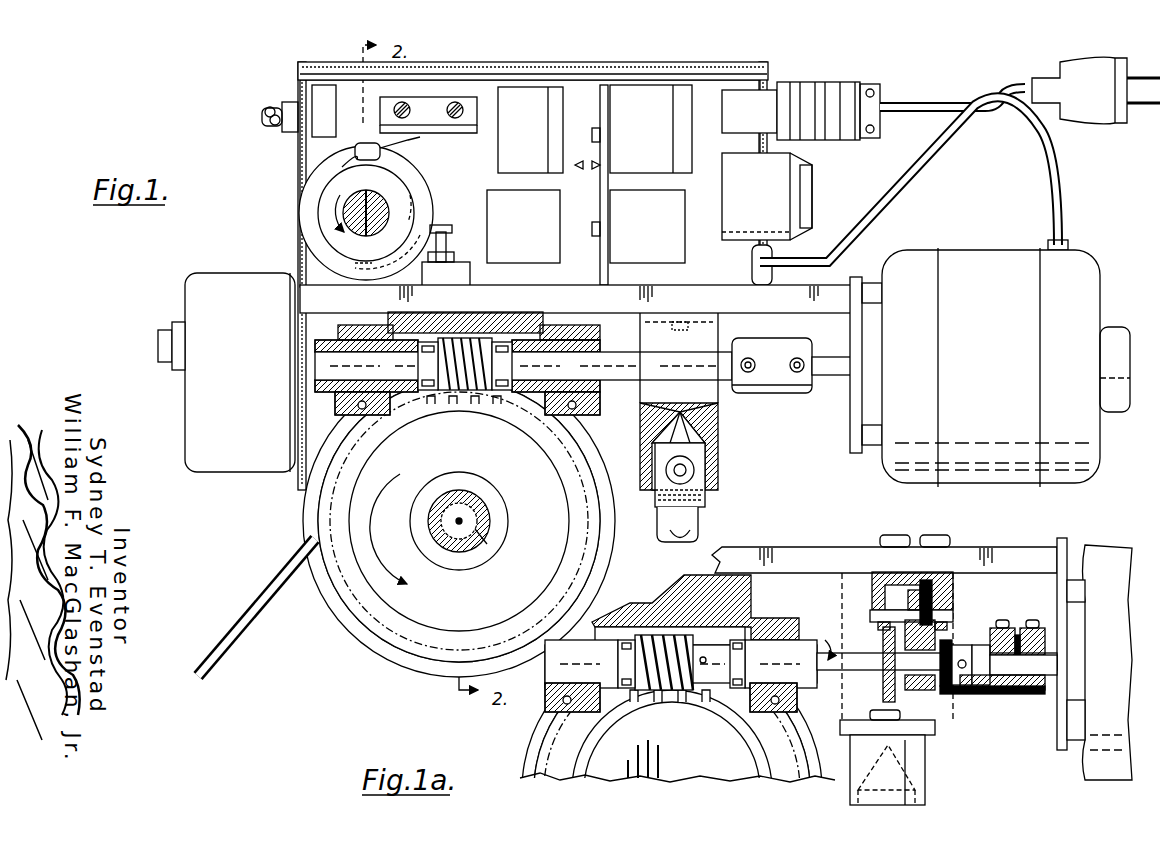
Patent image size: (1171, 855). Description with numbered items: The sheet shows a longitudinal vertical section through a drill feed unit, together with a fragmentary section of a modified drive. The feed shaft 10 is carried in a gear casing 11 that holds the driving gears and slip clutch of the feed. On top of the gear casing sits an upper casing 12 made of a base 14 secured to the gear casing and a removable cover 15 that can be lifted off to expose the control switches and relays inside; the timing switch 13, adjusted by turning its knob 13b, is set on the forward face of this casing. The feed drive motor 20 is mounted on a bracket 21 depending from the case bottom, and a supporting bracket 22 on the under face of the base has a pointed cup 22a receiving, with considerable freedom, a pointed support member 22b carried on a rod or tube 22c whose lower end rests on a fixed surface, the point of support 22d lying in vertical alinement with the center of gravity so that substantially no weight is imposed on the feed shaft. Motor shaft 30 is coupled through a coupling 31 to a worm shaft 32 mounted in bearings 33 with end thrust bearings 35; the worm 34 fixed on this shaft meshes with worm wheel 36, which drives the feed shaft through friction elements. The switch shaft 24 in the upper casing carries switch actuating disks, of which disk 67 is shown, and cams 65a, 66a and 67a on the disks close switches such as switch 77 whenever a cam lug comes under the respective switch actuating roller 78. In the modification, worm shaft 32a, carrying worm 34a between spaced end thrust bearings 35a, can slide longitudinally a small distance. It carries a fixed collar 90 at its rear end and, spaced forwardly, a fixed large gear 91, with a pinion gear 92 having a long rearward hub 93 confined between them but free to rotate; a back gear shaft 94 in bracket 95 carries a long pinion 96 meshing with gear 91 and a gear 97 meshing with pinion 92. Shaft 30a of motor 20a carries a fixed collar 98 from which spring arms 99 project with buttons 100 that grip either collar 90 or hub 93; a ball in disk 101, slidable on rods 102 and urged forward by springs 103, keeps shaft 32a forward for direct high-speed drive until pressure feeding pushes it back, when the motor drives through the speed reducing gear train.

In FIG. 1, the feed shaft 10 is at (480, 528).
In FIG. 1, the gear casing 11 is at (570, 332).
In FIG. 1, the casing 12 is at (590, 62).
In FIG. 1, the timing switch 13 is at (240, 372).
In FIG. 1, the knob 13b is at (158, 346).
In FIG. 1, the base 14 is at (576, 299).
In FIG. 1A, the base 14 is at (884, 560).
In FIG. 1, the removable cover 15 is at (487, 62).
In FIG. 1, the feed drive motor 20 is at (1006, 367).
In FIG. 1A, the motor 20a is at (1104, 662).
In FIG. 1, the bracket 21 is at (850, 432).
In FIG. 1, the supporting bracket 22 is at (722, 424).
In FIG. 1A, the supporting bracket 22 is at (845, 778).
In FIG. 1, the pointed cup 22a is at (700, 436).
In FIG. 1A, the pointed cup 22a is at (918, 790).
In FIG. 1, the pointed support member 22b is at (700, 455).
In FIG. 1, the rod or tube 22c is at (690, 520).
In FIG. 1, the point of support 22d is at (705, 420).
In FIG. 1, the switch shaft 24 is at (362, 218).
In FIG. 1, the motor shaft 30 is at (835, 375).
In FIG. 1A, the motor shaft 30a is at (1035, 675).
In FIG. 1, the coupling 31 is at (772, 365).
In FIG. 1, the worm shaft 32 is at (600, 367).
In FIG. 1A, the worm shaft 32a is at (856, 658).
In FIG. 1, the bearings 33 is at (345, 395).
In FIG. 1, the worm 34 is at (468, 392).
In FIG. 1A, the worm 34a is at (690, 692).
In FIG. 1, the end thrust bearings 35 is at (428, 392).
In FIG. 1A, the end thrust bearings 35a is at (627, 690).
In FIG. 1, the worm wheel 36 is at (478, 521).
In FIG. 1A, the worm wheel 36 is at (672, 747).
In FIG. 1, the switch actuating cam 65a is at (300, 130).
In FIG. 1, the switch actuating cam 66a is at (430, 230).
In FIG. 1, the switch actuating disk 67 is at (410, 186).
In FIG. 1, the switch actuating cam 67a is at (412, 207).
In FIG. 1, the switch 77 is at (428, 115).
In FIG. 1, the switch actuating roller 78 is at (372, 152).
In FIG. 1A, the fixed collar 90 is at (980, 690).
In FIG. 1A, the fixed large gear 91 is at (883, 690).
In FIG. 1A, the pinion gear 92 is at (920, 690).
In FIG. 1A, the hub 93 is at (962, 688).
In FIG. 1A, the back gear shaft 94 is at (930, 605).
In FIG. 1A, the bracket 95 is at (872, 582).
In FIG. 1A, the long pinion 96 is at (880, 602).
In FIG. 1A, the gear 97 is at (930, 580).
In FIG. 1A, the fixed collar 98 is at (1050, 630).
In FIG. 1A, the spring arms 99 is at (997, 630).
In FIG. 1A, the buttons 100 is at (946, 688).
In FIG. 1A, the disk 101 is at (1017, 635).
In FIG. 1A, the rods 102 is at (1010, 690).
In FIG. 1A, the springs 103 is at (985, 695).